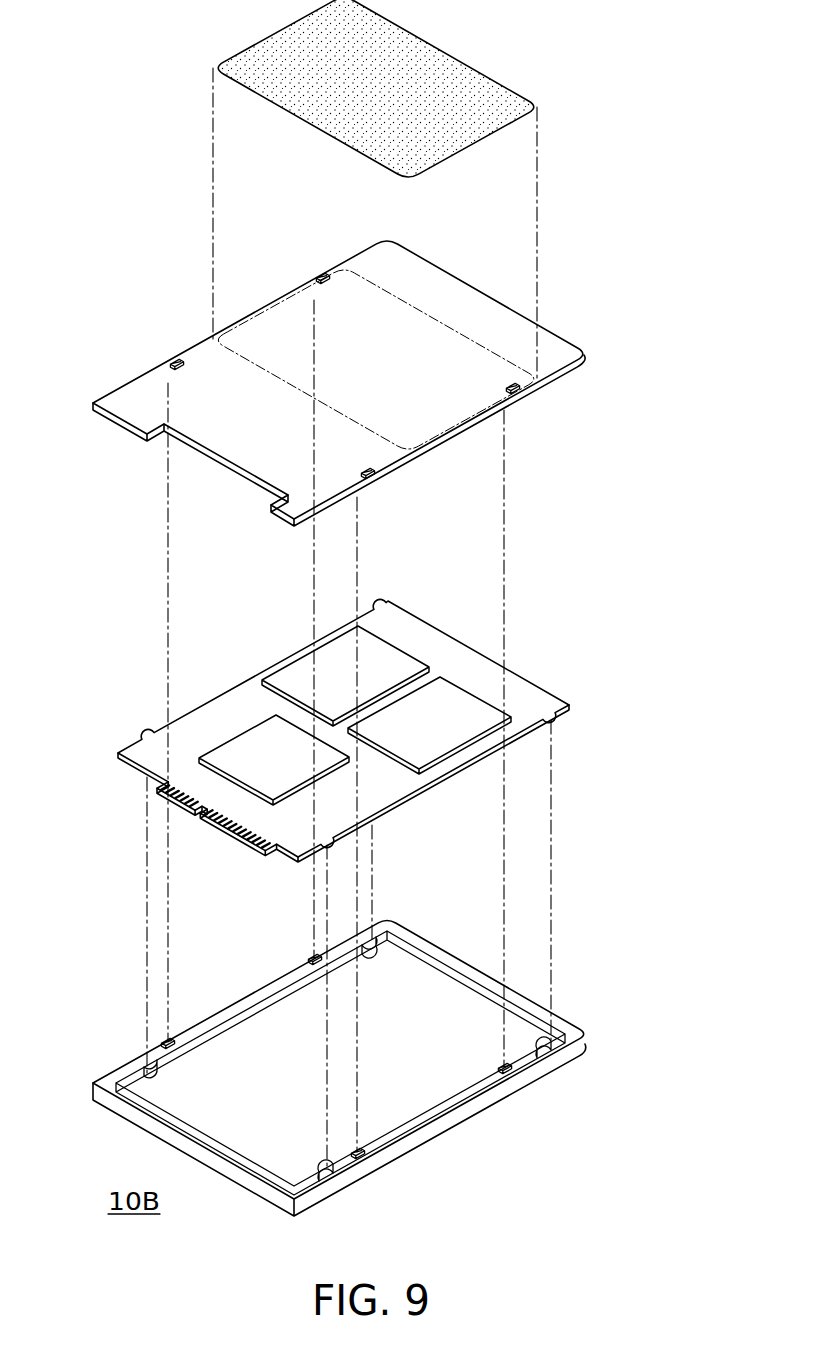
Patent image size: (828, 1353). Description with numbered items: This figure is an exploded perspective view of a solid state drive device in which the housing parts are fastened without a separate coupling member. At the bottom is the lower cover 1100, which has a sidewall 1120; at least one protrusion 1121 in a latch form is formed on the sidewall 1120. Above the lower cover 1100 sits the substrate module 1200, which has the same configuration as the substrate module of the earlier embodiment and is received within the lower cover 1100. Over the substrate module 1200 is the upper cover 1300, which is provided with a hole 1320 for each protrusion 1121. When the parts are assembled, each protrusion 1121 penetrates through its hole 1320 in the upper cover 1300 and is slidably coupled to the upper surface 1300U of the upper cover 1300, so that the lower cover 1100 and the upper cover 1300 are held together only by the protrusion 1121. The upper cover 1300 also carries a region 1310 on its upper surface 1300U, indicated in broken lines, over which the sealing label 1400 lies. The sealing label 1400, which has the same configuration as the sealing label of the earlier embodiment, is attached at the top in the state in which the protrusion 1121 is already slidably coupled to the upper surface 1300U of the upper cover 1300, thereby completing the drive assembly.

The sealing label 1400 is at (500, 138).
The upper cover 1300 is at (384, 371).
The upper surface of the upper cover 1300U is at (140, 402).
The label attachment region 1310 is at (443, 317).
The hole 1320 is at (179, 356).
The substrate module 1200 is at (505, 749).
The lower cover 1100 is at (339, 1052).
The sidewall 1120 is at (117, 1078).
The protrusion 1121 is at (310, 952).